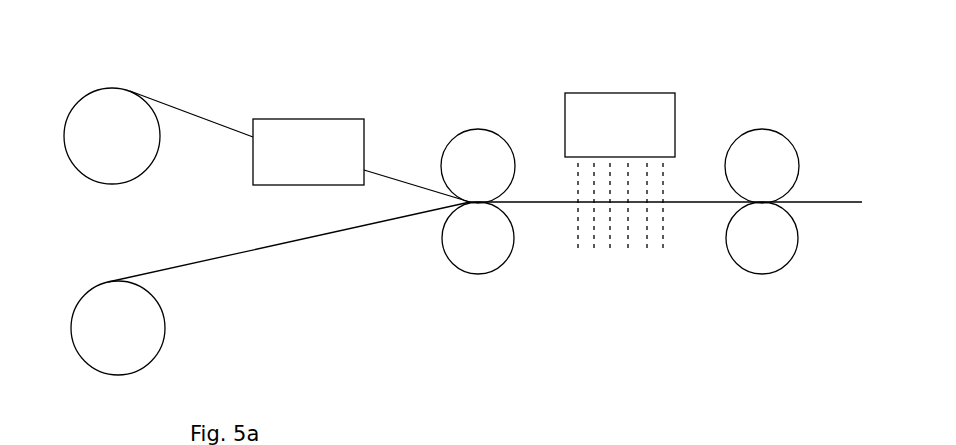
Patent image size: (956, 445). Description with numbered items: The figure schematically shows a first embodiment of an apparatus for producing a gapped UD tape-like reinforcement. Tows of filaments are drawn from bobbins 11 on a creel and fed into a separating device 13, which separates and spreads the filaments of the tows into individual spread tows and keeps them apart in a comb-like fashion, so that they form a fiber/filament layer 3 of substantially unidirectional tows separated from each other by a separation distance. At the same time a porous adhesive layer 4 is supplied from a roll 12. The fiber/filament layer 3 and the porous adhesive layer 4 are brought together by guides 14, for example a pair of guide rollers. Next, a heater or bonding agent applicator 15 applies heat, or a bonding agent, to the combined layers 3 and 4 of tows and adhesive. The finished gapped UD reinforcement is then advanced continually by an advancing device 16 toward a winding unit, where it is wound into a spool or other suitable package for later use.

The fiber/filament layer 3 is at (192, 110).
The porous adhesive layer 4 is at (337, 232).
The bobbins 11 is at (107, 112).
The roll 12 is at (138, 335).
The separating device 13 is at (308, 119).
The guides 14 is at (478, 130).
The heater or bonding agent applicator 15 is at (610, 93).
The advancing device 16 is at (766, 129).